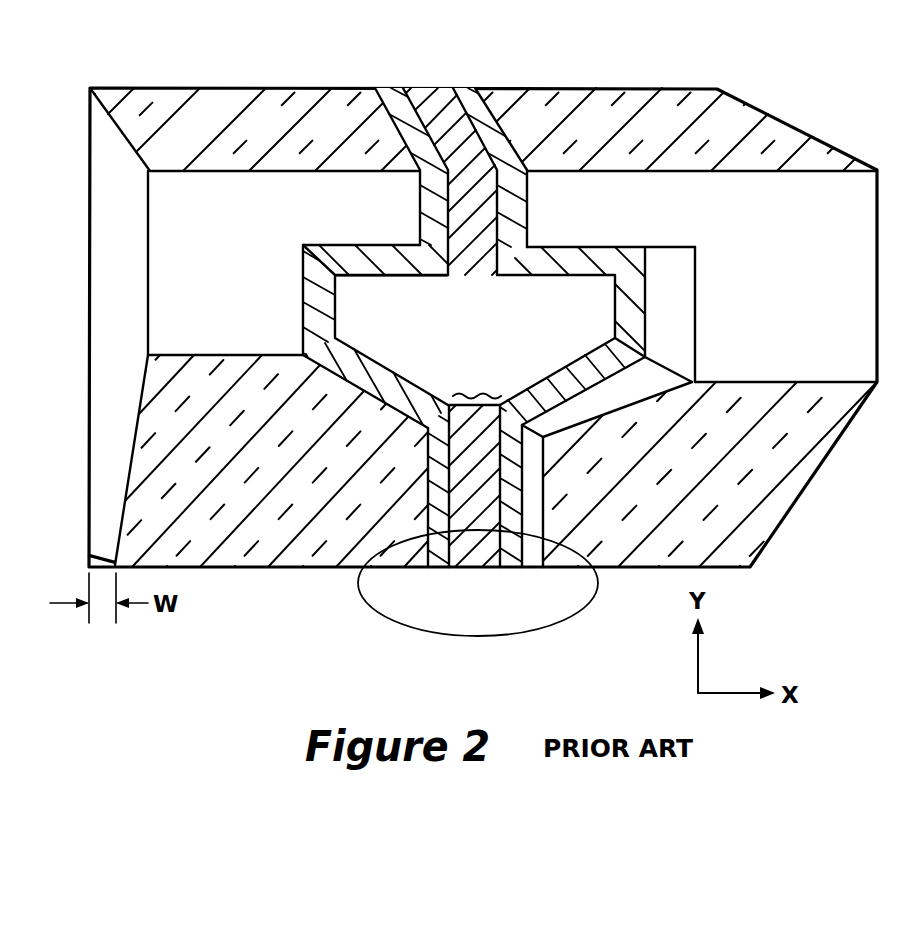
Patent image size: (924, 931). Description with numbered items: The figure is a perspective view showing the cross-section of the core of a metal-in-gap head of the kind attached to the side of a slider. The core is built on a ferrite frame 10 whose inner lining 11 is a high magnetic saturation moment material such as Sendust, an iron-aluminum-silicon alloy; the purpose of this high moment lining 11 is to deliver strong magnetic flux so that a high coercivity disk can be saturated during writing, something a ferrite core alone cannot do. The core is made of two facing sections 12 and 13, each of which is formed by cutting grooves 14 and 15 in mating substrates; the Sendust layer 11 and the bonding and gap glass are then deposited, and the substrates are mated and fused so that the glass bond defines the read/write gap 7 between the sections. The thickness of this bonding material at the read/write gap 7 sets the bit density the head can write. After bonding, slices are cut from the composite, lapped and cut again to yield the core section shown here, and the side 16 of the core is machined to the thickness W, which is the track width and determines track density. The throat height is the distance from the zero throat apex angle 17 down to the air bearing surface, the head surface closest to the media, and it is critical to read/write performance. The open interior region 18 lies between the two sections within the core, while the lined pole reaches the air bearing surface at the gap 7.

The ferrite frame 10 is at (653, 102).
The inner lining 11 is at (470, 88).
The core section 12 is at (258, 192).
The core section 13 is at (753, 190).
The groove 14 is at (335, 318).
The groove 15 is at (615, 322).
The side of the core 16 is at (88, 543).
The zero throat apex angle 17 is at (477, 381).
The inner cavity 18 is at (470, 290).
The read/write gap 7 is at (462, 570).